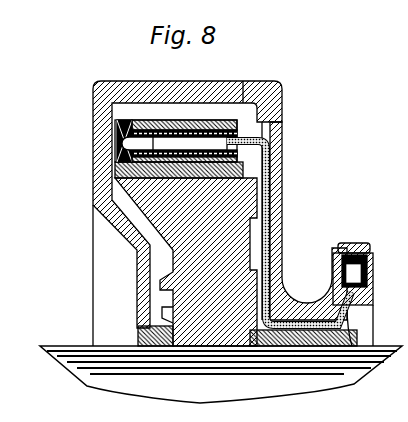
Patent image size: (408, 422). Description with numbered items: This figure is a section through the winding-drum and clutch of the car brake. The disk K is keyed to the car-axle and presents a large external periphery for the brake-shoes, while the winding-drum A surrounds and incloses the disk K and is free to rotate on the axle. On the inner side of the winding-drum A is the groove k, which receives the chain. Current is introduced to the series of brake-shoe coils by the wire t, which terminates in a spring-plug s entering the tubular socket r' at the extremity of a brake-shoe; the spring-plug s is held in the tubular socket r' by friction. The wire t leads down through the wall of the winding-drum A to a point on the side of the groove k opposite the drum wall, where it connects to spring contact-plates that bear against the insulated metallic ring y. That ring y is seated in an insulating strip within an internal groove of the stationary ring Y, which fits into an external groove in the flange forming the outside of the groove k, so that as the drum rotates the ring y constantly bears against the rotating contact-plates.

The winding-drum A is at (187, 204).
The disk K is at (186, 262).
The groove k is at (307, 234).
The spring-plug s is at (198, 143).
The tubular socket r' is at (174, 126).
The wire t is at (279, 190).
The stationary ring Y is at (343, 252).
The insulated metallic ring y is at (353, 262).